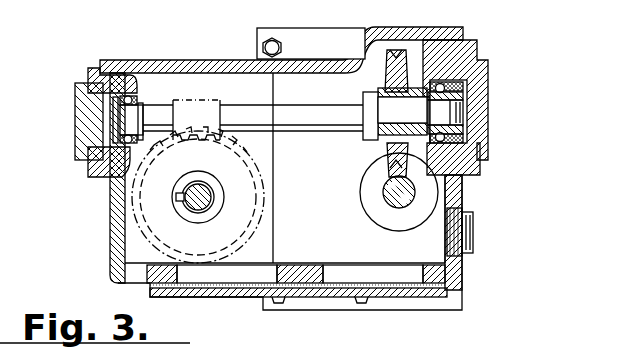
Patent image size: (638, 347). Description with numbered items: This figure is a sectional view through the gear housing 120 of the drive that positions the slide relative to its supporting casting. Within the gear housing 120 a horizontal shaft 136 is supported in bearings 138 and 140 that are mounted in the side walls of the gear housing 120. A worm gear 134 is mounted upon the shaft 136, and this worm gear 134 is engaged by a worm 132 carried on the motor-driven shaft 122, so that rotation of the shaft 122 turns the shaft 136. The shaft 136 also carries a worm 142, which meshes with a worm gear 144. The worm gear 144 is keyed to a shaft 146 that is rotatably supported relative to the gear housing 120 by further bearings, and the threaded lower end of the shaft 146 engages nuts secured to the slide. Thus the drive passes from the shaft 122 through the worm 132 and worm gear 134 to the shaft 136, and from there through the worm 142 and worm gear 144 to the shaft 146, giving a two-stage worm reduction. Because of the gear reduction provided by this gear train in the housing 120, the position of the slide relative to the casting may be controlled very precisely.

The gear housing 120 is at (157, 66).
The shaft 122 is at (390, 222).
The worm 132 is at (383, 200).
The worm gear 134 is at (393, 58).
The shaft 136 is at (292, 110).
The bearing 138 is at (443, 95).
The bearing 140 is at (96, 178).
The worm 142 is at (203, 112).
The worm gear 144 is at (235, 170).
The shaft 146 is at (183, 198).